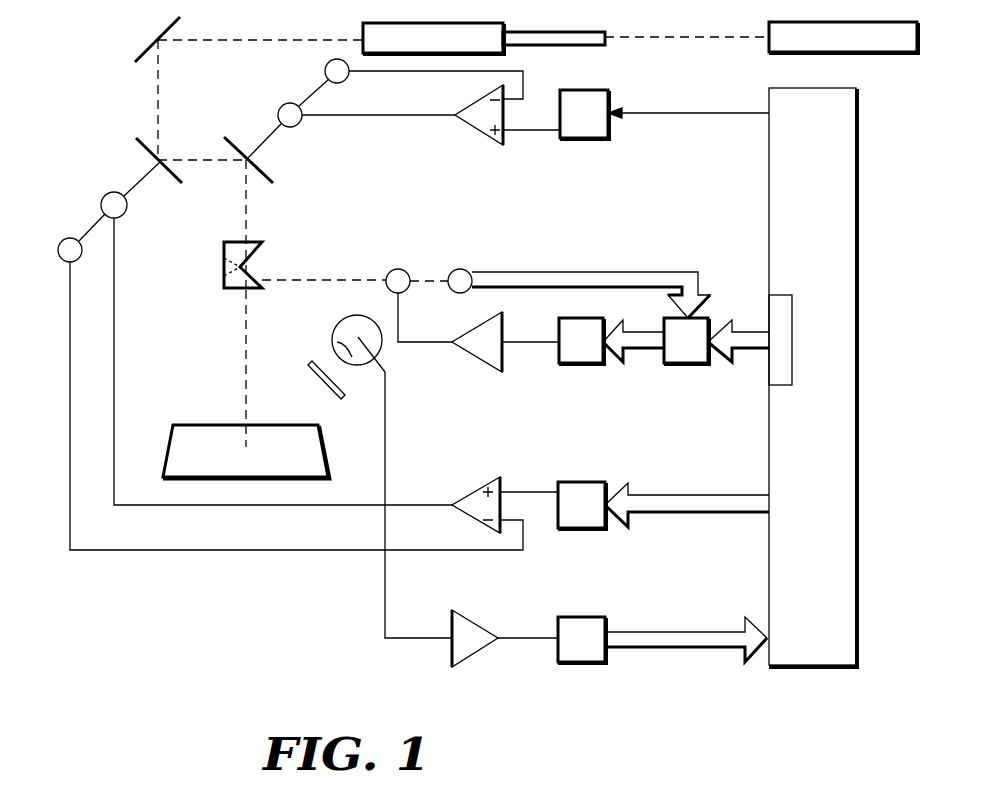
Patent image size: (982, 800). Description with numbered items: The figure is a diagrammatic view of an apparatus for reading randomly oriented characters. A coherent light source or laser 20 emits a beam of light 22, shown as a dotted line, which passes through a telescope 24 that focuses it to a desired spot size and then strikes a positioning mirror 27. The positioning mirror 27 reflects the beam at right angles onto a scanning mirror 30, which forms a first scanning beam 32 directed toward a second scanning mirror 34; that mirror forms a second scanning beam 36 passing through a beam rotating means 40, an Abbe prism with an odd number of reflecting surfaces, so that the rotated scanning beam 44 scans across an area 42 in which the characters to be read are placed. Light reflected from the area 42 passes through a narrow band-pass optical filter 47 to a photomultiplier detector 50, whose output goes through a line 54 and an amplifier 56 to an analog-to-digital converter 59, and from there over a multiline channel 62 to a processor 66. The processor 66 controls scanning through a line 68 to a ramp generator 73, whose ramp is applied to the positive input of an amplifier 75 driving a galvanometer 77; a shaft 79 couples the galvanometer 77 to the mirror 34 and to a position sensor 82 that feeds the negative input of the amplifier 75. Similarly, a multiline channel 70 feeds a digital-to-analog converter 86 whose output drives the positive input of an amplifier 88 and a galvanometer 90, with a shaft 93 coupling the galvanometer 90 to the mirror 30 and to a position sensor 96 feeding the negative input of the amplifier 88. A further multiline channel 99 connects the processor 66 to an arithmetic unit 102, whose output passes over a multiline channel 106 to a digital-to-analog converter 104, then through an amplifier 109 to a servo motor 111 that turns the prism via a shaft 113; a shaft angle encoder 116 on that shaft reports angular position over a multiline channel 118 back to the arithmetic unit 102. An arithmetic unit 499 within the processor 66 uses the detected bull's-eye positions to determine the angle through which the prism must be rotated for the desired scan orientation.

The laser 20 is at (830, 47).
The beam of light 22 is at (690, 35).
The telescope 24 is at (420, 49).
The positioning mirror 27 is at (147, 47).
The scanning mirror 30 is at (140, 147).
The first scanning beam 32 is at (218, 157).
The second scanning mirror 34 is at (242, 152).
The second scanning beam 36 is at (248, 211).
The beam rotating means 40 is at (262, 250).
The area 42 is at (193, 463).
The rotated scanning beam 44 is at (243, 363).
The optical filter 47 is at (307, 372).
The photomultiplier detector 50 is at (343, 318).
The line 54 is at (423, 640).
The amplifier 56 is at (470, 613).
The analog-to-digital converter 59 is at (569, 645).
The multiline channel 62 is at (713, 630).
The processor 66 is at (797, 143).
The line 68 is at (735, 112).
The multiline channel 70 is at (723, 495).
The ramp generator 73 is at (572, 118).
The amplifier 75 is at (476, 136).
The galvanometer 77 is at (300, 123).
The shaft 79 is at (262, 153).
The position sensor 82 is at (325, 64).
The digital-to-analog converter 86 is at (569, 510).
The amplifier 88 is at (478, 490).
The galvanometer 90 is at (103, 195).
The shaft 93 is at (128, 200).
The position sensor 96 is at (80, 260).
The multiline channel 99 is at (752, 330).
The arithmetic unit 102 is at (674, 345).
The digital-to-analog converter 104 is at (569, 345).
The multiline channel 106 is at (648, 354).
The amplifier 109 is at (478, 362).
The servo motor 111 is at (398, 269).
The shaft 113 is at (343, 280).
The shaft angle encoder 116 is at (457, 267).
The multiline channel 118 is at (600, 270).
The arithmetic unit 499 is at (793, 372).